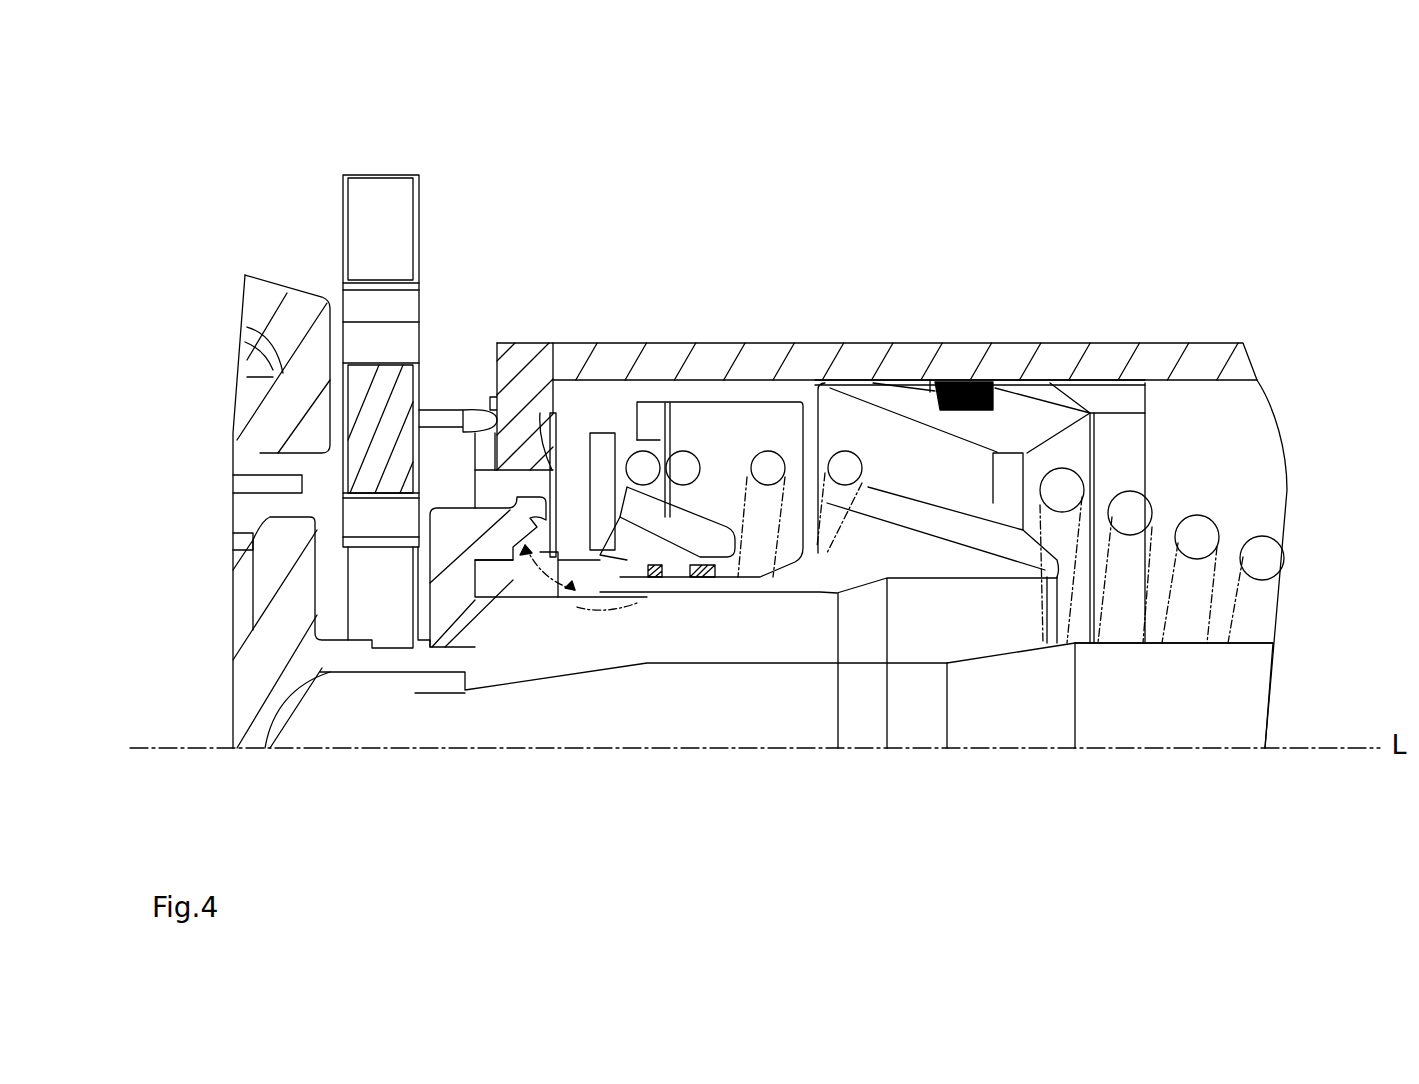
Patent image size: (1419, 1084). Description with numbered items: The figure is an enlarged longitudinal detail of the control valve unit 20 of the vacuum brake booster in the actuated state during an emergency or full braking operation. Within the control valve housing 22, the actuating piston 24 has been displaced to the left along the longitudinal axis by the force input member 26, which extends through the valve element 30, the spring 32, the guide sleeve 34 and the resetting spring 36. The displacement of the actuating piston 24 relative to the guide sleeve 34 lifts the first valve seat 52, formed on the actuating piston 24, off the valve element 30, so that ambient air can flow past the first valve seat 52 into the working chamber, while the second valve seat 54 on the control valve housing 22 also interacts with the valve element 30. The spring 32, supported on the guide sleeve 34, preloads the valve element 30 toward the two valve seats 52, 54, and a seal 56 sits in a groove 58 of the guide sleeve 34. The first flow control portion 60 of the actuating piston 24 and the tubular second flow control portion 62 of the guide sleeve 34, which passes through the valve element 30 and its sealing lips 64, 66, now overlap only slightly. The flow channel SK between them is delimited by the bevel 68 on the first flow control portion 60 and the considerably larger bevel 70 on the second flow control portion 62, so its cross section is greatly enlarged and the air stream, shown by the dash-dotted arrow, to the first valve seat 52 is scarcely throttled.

The control valve unit 20 is at (992, 170).
The control valve housing 22 is at (1173, 342).
The actuating piston 24 is at (290, 643).
The force input member 26 is at (1257, 685).
The valve element 30 is at (580, 432).
The spring 32 is at (768, 450).
The guide sleeve 34 is at (900, 400).
The resetting spring 36 is at (1257, 530).
The first valve seat 52 is at (520, 517).
The second valve seat 54 is at (553, 460).
The seal 56 is at (967, 383).
The groove 58 is at (933, 383).
The first flow control portion 60 is at (520, 517).
The second flow control portion 62 is at (615, 585).
The sealing lip 64 is at (652, 577).
The sealing lip 66 is at (705, 577).
The bevel 68 is at (575, 582).
The bevel 70 is at (567, 590).
The flow channel SK is at (622, 475).